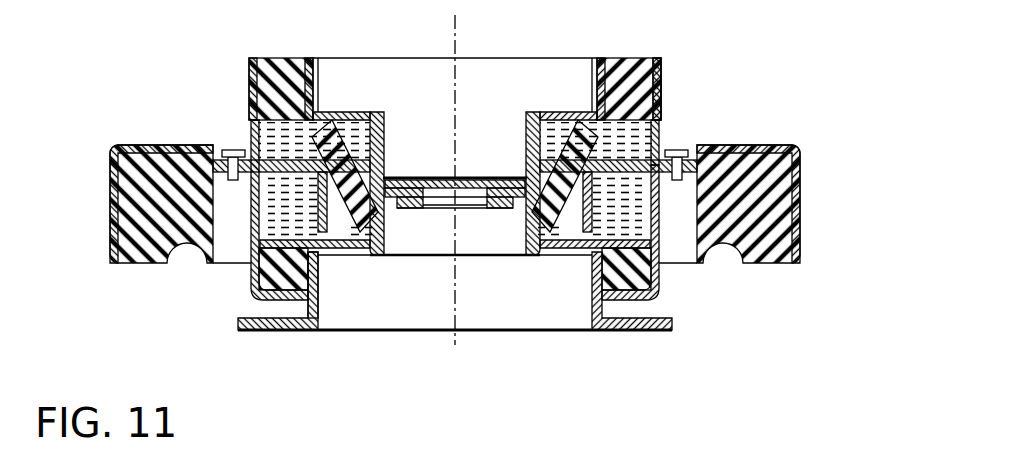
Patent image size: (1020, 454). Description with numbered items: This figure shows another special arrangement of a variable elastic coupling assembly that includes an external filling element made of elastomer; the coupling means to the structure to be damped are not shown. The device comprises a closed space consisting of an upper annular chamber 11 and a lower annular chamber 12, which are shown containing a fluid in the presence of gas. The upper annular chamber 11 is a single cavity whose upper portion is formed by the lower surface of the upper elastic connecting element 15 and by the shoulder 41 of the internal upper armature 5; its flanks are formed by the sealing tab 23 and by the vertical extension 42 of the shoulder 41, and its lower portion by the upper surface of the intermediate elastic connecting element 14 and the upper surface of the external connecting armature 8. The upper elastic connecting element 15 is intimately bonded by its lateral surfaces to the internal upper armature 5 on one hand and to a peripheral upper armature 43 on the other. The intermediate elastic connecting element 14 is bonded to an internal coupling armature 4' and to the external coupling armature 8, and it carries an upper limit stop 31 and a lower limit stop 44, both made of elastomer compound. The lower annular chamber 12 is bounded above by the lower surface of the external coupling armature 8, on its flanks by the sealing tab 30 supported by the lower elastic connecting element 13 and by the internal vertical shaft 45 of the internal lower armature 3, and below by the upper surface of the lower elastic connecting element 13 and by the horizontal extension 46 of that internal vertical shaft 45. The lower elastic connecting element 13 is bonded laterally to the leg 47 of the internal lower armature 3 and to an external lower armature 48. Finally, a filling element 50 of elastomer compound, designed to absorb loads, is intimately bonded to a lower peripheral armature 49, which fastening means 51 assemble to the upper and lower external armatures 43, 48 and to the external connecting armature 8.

The internal lower armature 3 is at (583, 313).
The internal coupling armature 4' is at (339, 209).
The internal upper armature 5 is at (598, 62).
The external connecting armature 8 is at (258, 140).
The upper annular chamber 11 is at (668, 105).
The lower annular chamber 12 is at (655, 268).
The lower elastic connecting element 13 is at (258, 277).
The intermediate elastic connecting element 14 is at (528, 170).
The upper elastic connecting element 15 is at (298, 75).
The sealing tab 23 is at (668, 130).
The sealing tab 30 is at (773, 267).
The upper limit stop 31 is at (330, 118).
The shoulder 41 is at (573, 110).
The vertical extension 42 is at (538, 122).
The peripheral upper armature 43 is at (663, 64).
The lower limit stop 44 is at (325, 262).
The internal vertical shaft 45 is at (372, 222).
The horizontal extension 46 is at (340, 260).
The leg 47 is at (323, 333).
The external lower armature 48 is at (657, 283).
The lower peripheral armature 49 is at (160, 145).
The filling element 50 is at (137, 247).
The fastening means 51 is at (695, 153).